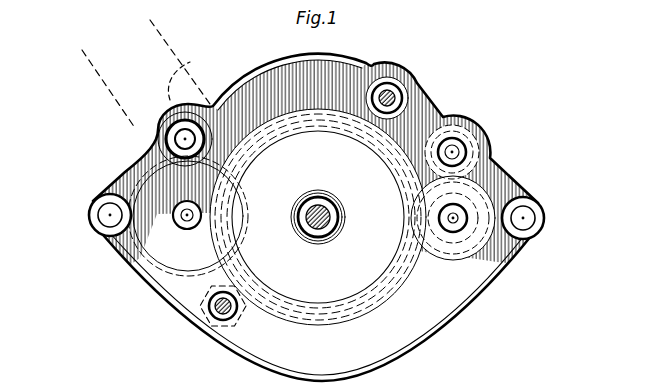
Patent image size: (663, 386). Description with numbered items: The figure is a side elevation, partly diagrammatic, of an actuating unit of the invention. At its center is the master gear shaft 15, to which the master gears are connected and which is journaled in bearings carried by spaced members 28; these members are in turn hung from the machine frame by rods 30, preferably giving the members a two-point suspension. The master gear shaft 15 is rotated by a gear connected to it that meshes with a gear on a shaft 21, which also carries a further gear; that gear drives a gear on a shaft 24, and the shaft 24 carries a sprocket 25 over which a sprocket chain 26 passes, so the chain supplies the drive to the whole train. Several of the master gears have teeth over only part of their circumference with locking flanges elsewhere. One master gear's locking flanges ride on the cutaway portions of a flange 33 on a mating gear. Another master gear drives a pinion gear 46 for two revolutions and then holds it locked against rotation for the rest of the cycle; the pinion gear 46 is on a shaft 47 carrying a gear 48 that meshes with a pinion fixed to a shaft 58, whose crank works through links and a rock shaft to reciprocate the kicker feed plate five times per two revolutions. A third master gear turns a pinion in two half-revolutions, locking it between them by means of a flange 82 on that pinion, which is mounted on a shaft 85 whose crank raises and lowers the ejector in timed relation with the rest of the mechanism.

The master gear shaft 15 is at (322, 224).
The shaft 21 is at (243, 195).
The shaft 24 is at (176, 141).
The sprocket 25 is at (193, 73).
The sprocket chain 26 is at (174, 58).
The spaced members 28 is at (425, 122).
The rods 30 is at (106, 218).
The flange 33 is at (410, 76).
The pinion gear 46 is at (503, 167).
The shaft 47 is at (450, 218).
The gear 48 is at (490, 264).
The shaft 58 is at (482, 123).
The flange 82 is at (241, 327).
The shaft 85 is at (237, 300).